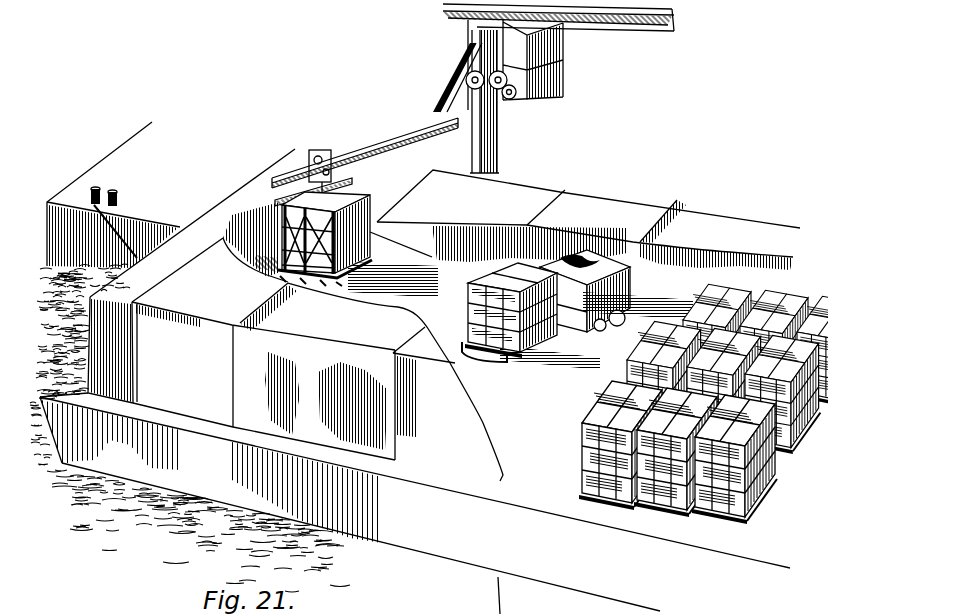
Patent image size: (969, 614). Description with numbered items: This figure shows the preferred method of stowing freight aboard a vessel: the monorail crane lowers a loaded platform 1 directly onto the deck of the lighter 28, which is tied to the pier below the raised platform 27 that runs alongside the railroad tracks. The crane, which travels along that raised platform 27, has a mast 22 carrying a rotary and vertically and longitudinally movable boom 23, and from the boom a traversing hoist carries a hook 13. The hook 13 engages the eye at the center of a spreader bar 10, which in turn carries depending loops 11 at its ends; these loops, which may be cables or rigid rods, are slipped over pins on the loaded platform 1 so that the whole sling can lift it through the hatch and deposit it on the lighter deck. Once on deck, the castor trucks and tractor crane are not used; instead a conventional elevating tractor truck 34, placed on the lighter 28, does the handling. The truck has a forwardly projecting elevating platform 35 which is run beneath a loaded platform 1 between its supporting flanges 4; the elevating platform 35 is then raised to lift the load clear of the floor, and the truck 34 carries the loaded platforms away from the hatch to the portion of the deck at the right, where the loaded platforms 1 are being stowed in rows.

The loaded platform 1 is at (358, 266).
The supporting flanges 4 is at (340, 308).
The spreader bar 10 is at (352, 184).
The depending loops 11 is at (268, 276).
The hook 13 is at (290, 185).
The mast 22 is at (497, 160).
The boom 23 is at (382, 137).
The raised platform 27 is at (132, 220).
The lighter 28 is at (715, 220).
The elevating tractor truck 34 is at (593, 330).
The elevating platform 35 is at (490, 353).